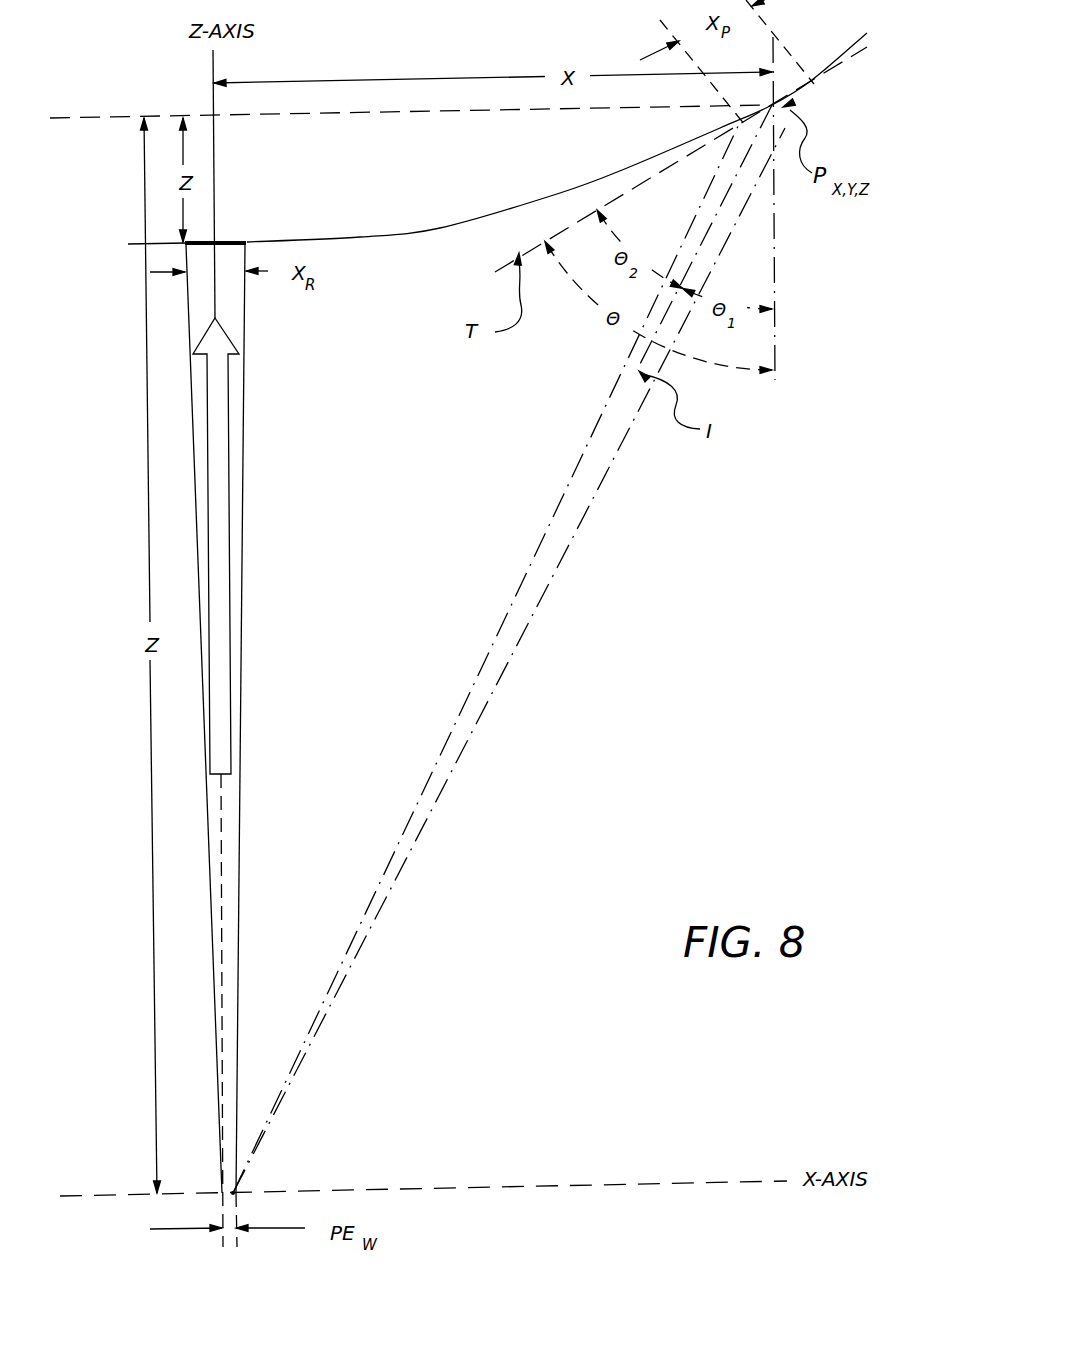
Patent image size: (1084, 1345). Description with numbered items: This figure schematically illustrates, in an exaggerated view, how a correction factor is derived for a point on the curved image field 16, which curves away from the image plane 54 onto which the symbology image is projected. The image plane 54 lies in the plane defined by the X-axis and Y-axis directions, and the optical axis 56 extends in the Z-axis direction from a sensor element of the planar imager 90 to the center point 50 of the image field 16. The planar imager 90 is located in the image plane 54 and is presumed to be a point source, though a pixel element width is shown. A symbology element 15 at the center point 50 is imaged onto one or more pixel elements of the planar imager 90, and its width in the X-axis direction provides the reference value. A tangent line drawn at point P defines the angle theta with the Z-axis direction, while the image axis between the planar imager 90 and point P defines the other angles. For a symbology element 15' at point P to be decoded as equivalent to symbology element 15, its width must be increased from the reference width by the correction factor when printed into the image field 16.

The center point 50 is at (218, 222).
The symbology element 15 is at (233, 216).
The curved image field 16 is at (440, 236).
The symbology element 15' is at (832, 85).
The optical axis 56 is at (236, 507).
The planar imager 90 is at (265, 1185).
The image plane 54 is at (406, 1182).